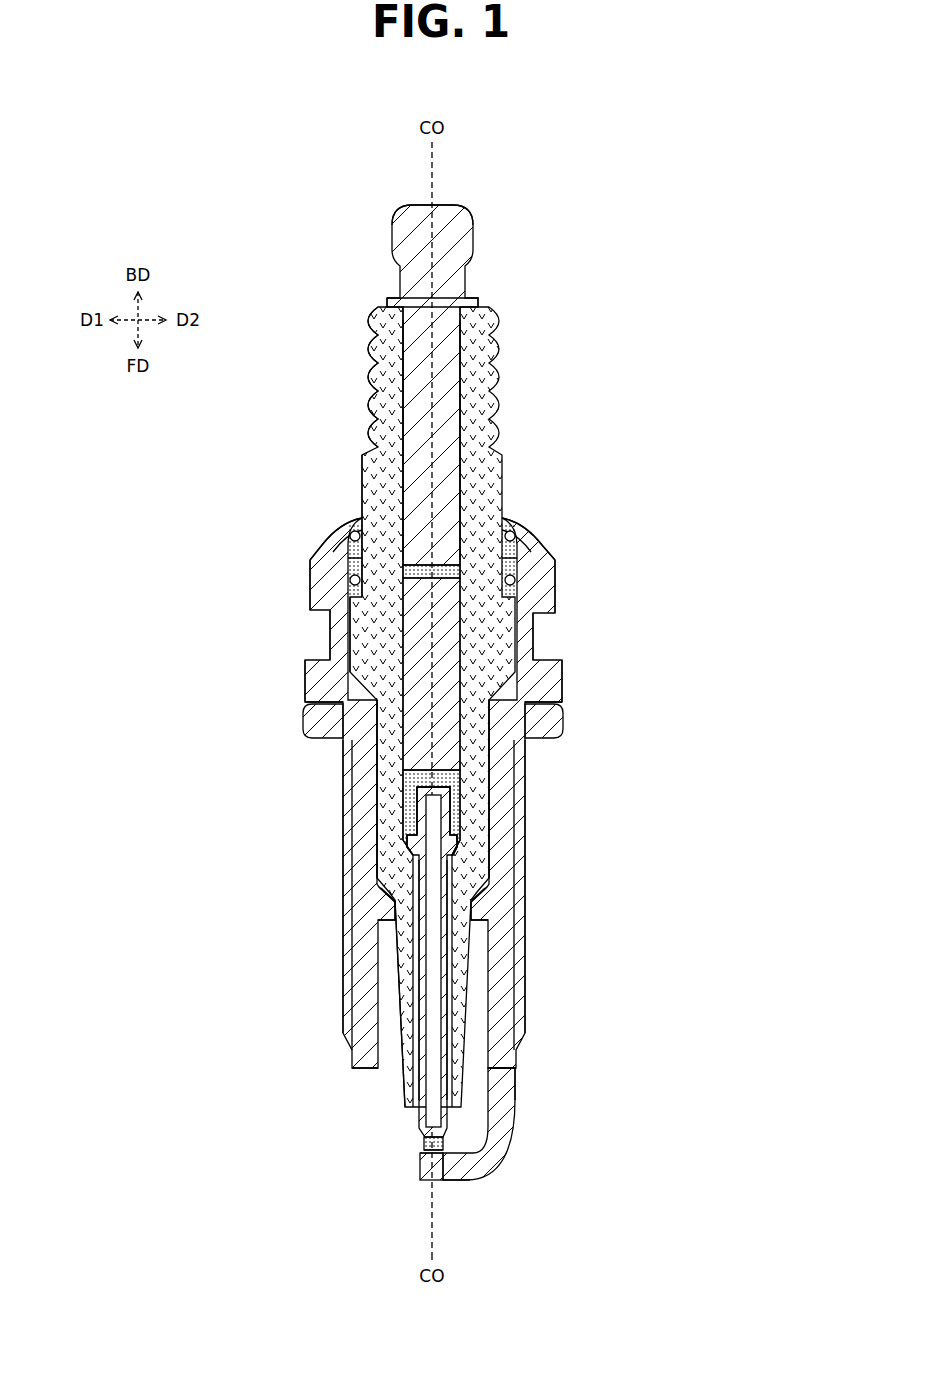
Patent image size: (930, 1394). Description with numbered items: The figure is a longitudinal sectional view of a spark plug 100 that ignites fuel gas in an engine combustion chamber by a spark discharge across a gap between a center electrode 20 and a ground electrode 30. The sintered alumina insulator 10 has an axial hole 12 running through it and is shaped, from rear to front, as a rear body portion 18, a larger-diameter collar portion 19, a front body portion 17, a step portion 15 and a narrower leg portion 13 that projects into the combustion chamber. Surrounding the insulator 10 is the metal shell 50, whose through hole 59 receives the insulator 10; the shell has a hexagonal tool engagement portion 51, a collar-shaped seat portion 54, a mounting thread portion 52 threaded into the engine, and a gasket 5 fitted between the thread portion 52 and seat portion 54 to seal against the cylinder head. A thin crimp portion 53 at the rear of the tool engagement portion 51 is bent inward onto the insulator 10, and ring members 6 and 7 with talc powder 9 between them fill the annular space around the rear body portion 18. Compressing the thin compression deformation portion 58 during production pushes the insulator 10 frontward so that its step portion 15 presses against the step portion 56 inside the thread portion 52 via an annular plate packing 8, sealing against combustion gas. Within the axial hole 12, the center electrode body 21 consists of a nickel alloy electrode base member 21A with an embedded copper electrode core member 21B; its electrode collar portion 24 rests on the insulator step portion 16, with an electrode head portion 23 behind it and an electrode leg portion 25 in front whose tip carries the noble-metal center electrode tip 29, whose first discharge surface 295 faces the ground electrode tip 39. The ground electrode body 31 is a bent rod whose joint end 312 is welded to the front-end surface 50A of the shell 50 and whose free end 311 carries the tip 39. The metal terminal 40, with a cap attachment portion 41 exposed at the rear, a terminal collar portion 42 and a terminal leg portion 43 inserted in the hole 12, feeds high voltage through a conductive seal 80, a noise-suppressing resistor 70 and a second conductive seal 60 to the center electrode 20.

The spark plug 100 is at (533, 164).
The gasket 5 is at (303, 722).
The ring member 6 is at (349, 536).
The ring member 7 is at (349, 583).
The plate packing 8 is at (483, 905).
The talc powder 9 is at (338, 542).
The insulator 10 is at (512, 420).
The axial hole 12 is at (372, 378).
The leg portion 13 is at (400, 985).
The step portion 15 is at (490, 868).
The step portion 16 is at (470, 848).
The front body portion 17 is at (376, 776).
The rear body portion 18 is at (363, 461).
The collar portion 19 is at (349, 632).
The center electrode 20 is at (416, 1128).
The center electrode body 21 is at (610, 792).
The electrode base member 21A is at (452, 795).
The electrode core member 21B is at (441, 825).
The electrode head portion 23 is at (416, 815).
The electrode collar portion 24 is at (408, 848).
The electrode leg portion 25 is at (418, 935).
The center electrode tip 29 is at (423, 1142).
The first discharge surface 295 is at (431, 1151).
The ground electrode 30 is at (521, 1168).
The ground electrode body 31 is at (450, 1181).
The free end 311 is at (412, 1181).
The joint end 312 is at (516, 1076).
The ground electrode tip 39 is at (440, 1161).
The metal terminal 40 is at (490, 236).
The cap attachment portion 41 is at (391, 232).
The terminal collar portion 42 is at (388, 301).
The terminal leg portion 43 is at (418, 355).
The metal shell 50 is at (597, 655).
The front-end surface 50A is at (370, 1069).
The tool engagement portion 51 is at (309, 581).
The mounting thread portion 52 is at (342, 761).
The crimp portion 53 is at (349, 520).
The seat portion 54 is at (304, 681).
The step portion 56 is at (386, 912).
The compression deformation portion 58 is at (329, 641).
The through hole 59 is at (330, 701).
The conductive seal 60 is at (404, 792).
The resistor 70 is at (355, 605).
The conductive seal 80 is at (350, 560).